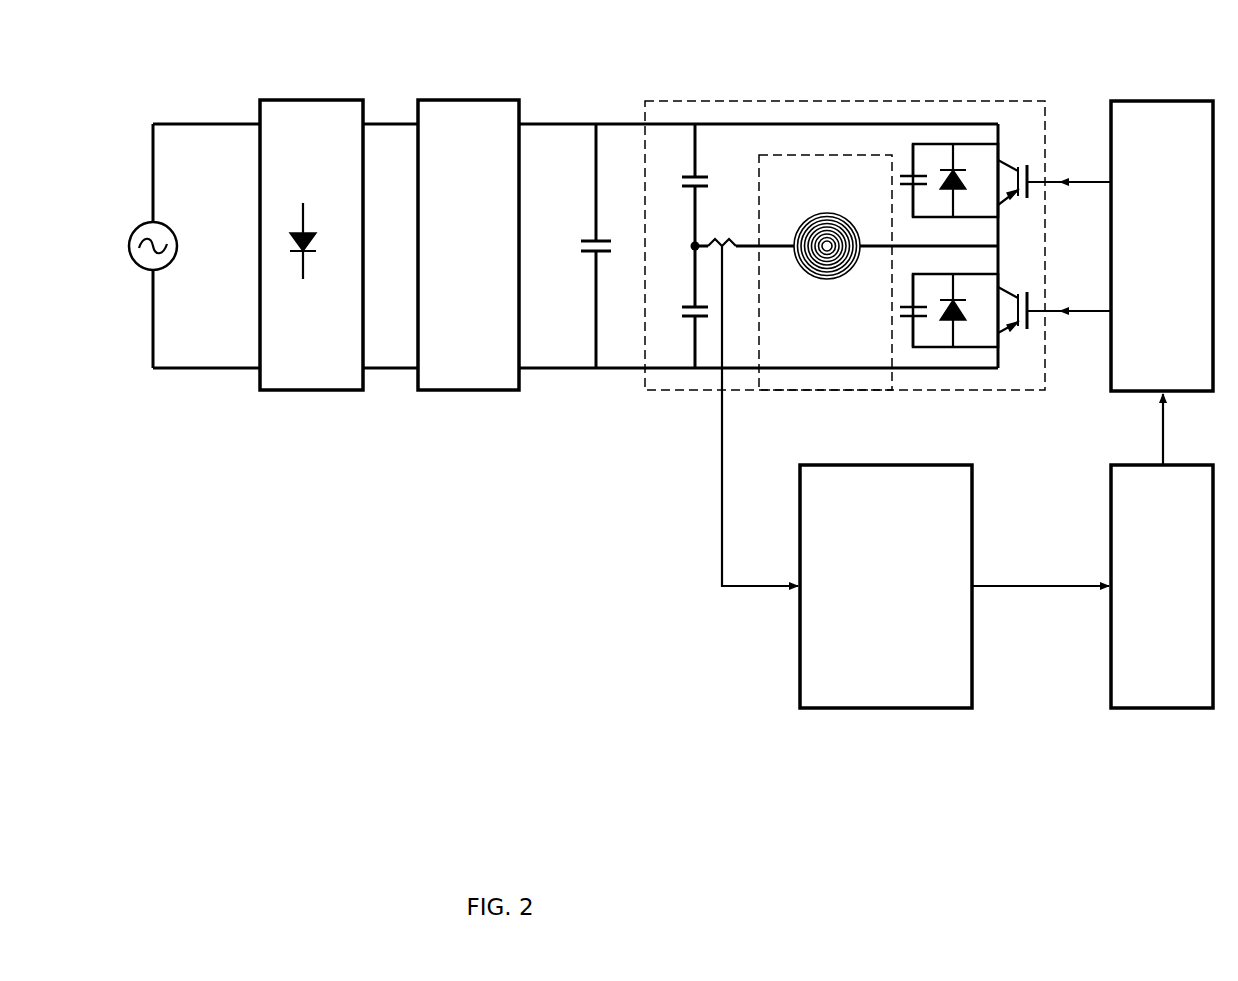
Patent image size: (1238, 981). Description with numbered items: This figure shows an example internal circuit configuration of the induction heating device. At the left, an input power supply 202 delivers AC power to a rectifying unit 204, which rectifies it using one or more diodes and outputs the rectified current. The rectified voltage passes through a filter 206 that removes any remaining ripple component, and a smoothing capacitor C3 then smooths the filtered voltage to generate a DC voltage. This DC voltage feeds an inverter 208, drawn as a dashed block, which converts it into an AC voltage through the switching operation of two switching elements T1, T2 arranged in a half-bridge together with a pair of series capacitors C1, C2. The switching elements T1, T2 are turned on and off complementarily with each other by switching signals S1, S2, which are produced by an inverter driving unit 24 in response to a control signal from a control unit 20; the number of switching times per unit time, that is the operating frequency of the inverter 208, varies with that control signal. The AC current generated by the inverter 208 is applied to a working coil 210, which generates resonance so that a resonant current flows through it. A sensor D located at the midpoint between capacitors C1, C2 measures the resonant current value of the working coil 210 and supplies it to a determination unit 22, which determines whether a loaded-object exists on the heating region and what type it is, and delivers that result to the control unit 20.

The input power supply 202 is at (136, 226).
The rectifying unit 204 is at (310, 100).
The filter 206 is at (468, 100).
The inverter 208 is at (880, 101).
The working coil 210 is at (828, 213).
The control unit 20 is at (1163, 710).
The determination unit 22 is at (886, 710).
The inverter driving unit 24 is at (1163, 100).
The switching element T1 is at (967, 135).
The switching element T2 is at (974, 378).
The switching signal S1 is at (1069, 168).
The switching signal S2 is at (1069, 297).
The capacitor C1 is at (665, 183).
The capacitor C2 is at (665, 313).
The smoothing capacitor C3 is at (567, 247).
The sensor D is at (753, 402).